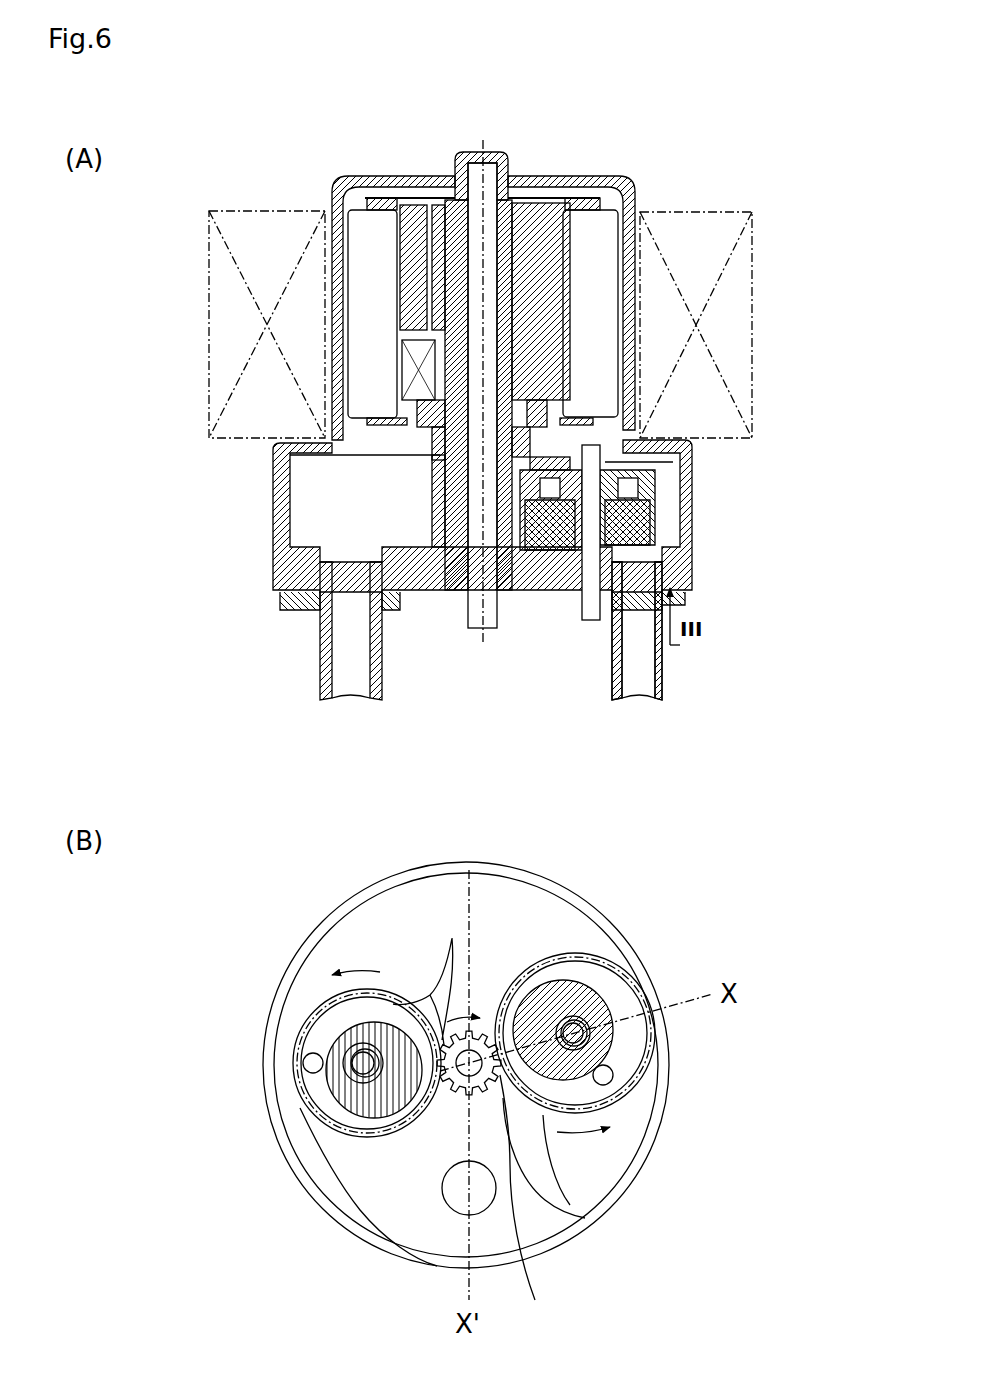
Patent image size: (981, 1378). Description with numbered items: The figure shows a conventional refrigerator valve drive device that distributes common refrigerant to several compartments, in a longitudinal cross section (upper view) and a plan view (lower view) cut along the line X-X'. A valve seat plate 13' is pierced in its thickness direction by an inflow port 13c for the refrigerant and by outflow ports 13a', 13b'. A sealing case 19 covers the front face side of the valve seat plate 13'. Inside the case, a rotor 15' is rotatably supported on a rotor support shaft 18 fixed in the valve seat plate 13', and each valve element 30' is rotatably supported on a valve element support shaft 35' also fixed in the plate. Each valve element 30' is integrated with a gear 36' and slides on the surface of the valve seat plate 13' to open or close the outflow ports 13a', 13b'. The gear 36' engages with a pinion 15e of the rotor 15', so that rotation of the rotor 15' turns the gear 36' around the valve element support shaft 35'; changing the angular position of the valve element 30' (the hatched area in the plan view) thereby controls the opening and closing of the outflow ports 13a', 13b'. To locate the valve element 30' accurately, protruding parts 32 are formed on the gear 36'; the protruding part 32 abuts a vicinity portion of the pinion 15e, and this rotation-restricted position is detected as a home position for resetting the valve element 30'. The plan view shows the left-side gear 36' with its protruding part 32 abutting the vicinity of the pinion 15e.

The rotor support shaft 18 is at (480, 207).
The rotor 15' is at (505, 359).
The sealing case 19 is at (613, 187).
The valve element support shaft 35' is at (497, 740).
The gear 36' is at (497, 753).
The pinion 15e is at (380, 545).
The valve seat plate 13' is at (443, 525).
The inflow port 13c is at (320, 600).
The valve element 30' is at (456, 808).
The outflow port 13a' is at (676, 855).
The outflow port 13b' is at (418, 841).
The protruding part 32 is at (453, 940).